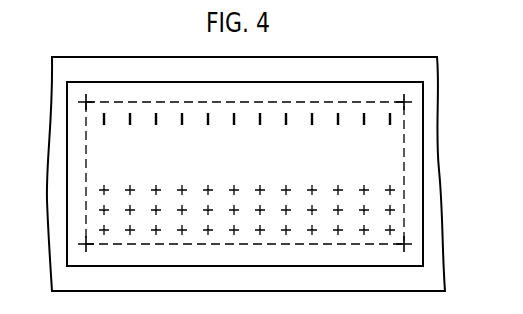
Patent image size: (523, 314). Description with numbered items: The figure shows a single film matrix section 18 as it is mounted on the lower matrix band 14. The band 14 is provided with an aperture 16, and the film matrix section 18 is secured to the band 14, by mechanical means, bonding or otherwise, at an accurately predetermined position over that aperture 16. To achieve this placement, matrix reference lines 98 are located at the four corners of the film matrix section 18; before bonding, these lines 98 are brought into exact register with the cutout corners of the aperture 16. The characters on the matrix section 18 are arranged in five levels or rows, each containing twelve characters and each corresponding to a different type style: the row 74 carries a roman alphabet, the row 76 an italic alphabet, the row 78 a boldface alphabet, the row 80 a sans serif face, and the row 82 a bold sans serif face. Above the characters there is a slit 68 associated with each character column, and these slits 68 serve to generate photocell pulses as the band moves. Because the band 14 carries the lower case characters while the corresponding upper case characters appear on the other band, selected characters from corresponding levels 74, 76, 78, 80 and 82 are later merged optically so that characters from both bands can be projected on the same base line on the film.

The matrix band 14 is at (438, 70).
The aperture 16 is at (88, 165).
The film matrix section 18 is at (338, 82).
The slit 68 is at (388, 117).
The row of roman alphabet characters 74 is at (396, 147).
The row of italic alphabet characters 76 is at (398, 169).
The row of boldface alphabet characters 78 is at (395, 191).
The row of sans serif characters 80 is at (396, 212).
The row of bold sans serif characters 82 is at (396, 233).
The matrix reference lines 98 is at (60, 104).